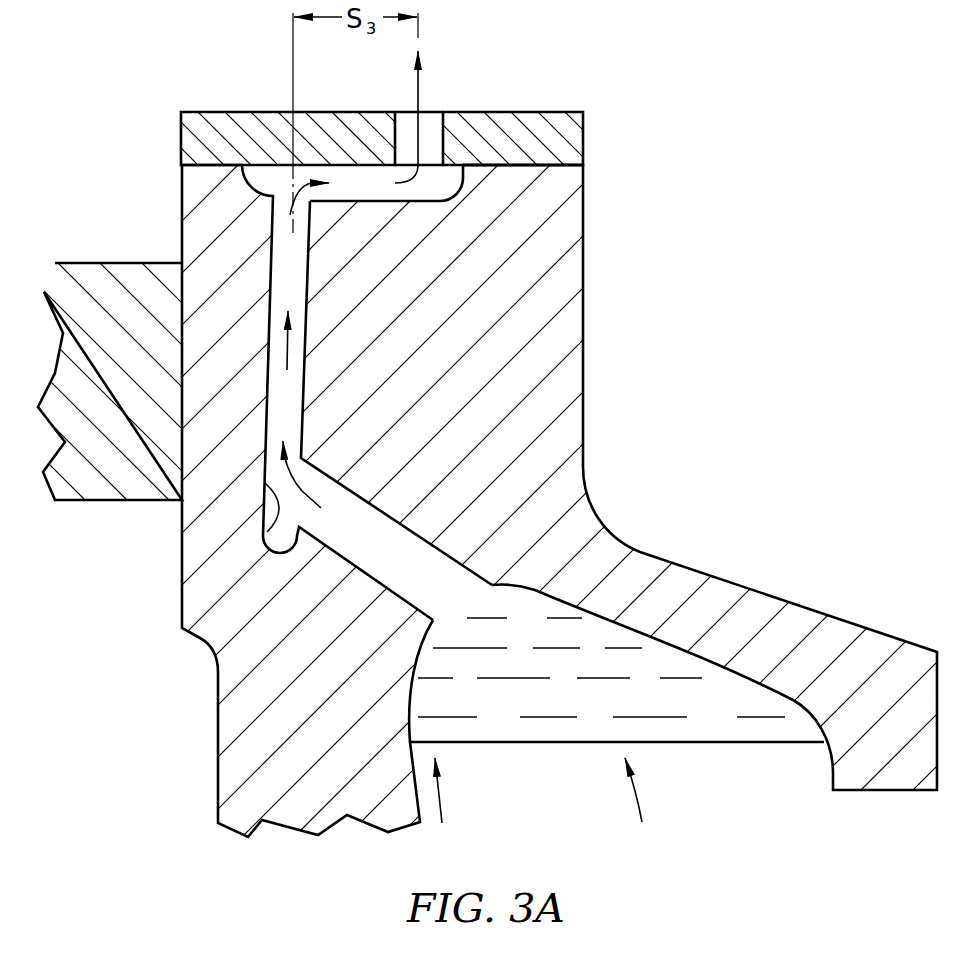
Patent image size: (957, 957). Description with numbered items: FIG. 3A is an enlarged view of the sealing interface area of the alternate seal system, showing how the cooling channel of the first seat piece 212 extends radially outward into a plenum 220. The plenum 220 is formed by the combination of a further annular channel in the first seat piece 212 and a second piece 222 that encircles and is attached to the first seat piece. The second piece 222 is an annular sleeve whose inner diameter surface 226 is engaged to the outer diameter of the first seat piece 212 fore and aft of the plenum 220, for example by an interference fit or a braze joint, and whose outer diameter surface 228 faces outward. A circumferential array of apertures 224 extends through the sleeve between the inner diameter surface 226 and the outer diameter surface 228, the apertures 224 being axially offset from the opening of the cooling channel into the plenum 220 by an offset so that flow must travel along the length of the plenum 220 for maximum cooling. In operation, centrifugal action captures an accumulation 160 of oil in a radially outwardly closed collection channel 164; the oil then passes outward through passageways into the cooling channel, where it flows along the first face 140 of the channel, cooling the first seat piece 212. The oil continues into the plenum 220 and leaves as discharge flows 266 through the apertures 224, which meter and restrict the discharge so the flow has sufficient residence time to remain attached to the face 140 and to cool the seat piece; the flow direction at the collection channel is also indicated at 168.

The first surface or face 140 is at (263, 538).
The accumulation of oil 160 is at (553, 705).
The collection channel 164 is at (642, 806).
The fluid flow 168 is at (440, 797).
The first seat piece 212 is at (527, 286).
The plenum 220 is at (363, 171).
The second piece 222 is at (543, 117).
The apertures 224 is at (432, 131).
The inner diameter surface 226 is at (537, 187).
The outer diameter surface 228 is at (231, 110).
The discharge flows 266 is at (418, 84).